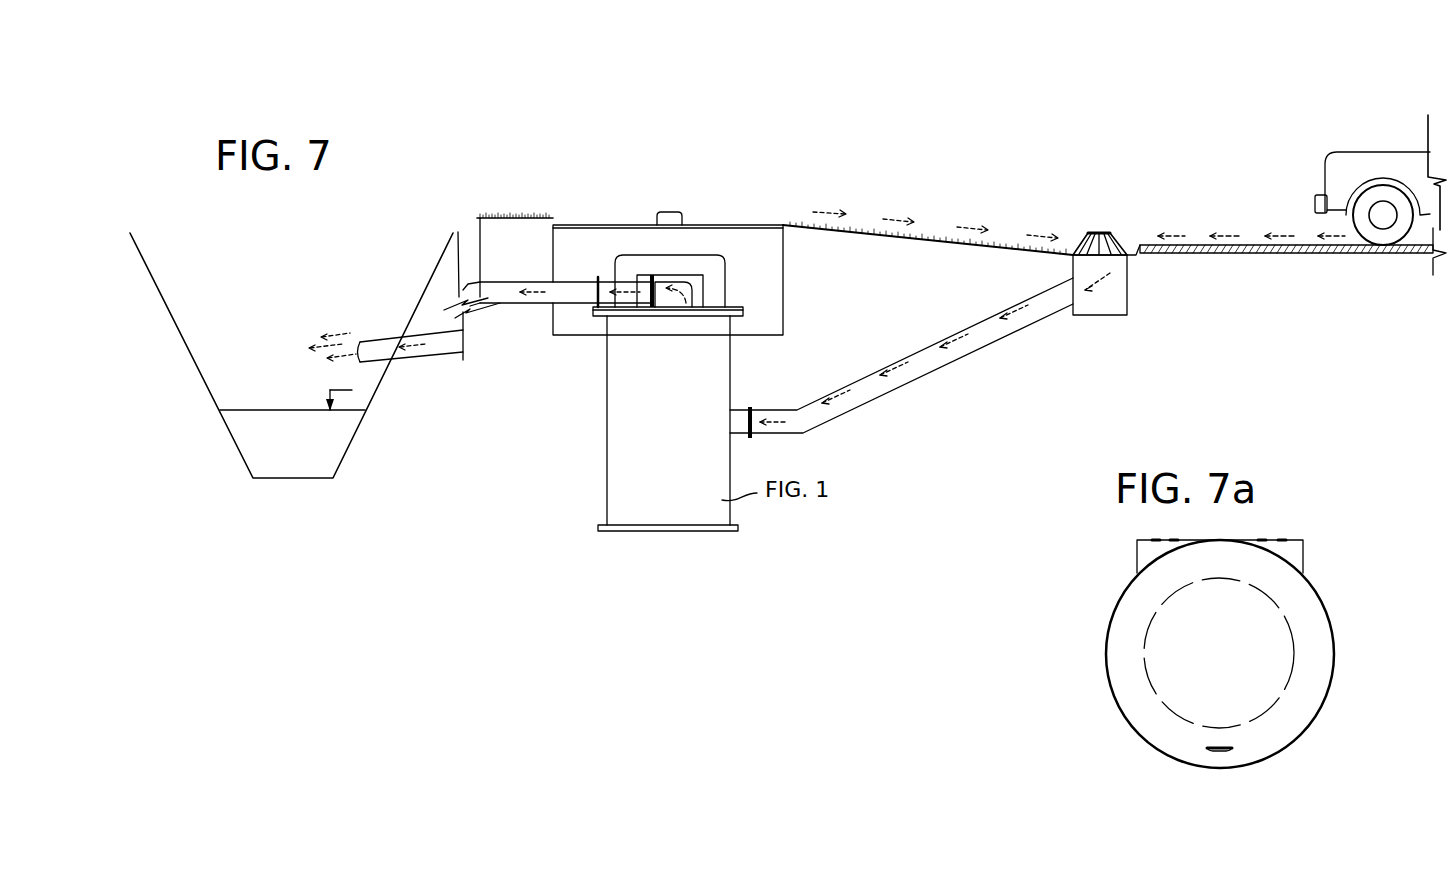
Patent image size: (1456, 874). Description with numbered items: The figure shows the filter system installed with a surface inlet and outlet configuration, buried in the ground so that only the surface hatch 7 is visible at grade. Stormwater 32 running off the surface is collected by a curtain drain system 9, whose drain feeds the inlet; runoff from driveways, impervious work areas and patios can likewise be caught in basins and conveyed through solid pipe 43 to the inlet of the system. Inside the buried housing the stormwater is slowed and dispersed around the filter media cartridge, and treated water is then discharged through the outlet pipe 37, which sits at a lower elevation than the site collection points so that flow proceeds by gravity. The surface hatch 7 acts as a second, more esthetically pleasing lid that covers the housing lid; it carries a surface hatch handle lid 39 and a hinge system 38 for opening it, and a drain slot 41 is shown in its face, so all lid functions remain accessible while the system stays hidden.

In FIG. 7, the surface hatch 7 is at (617, 224).
In FIG. 7A, the surface hatch 7 is at (1317, 625).
In FIG. 7, the curtain drain system 9 is at (1112, 307).
In FIG. 7, the stormwater 32 is at (1252, 229).
In FIG. 7, the outlet pipe 37 is at (513, 304).
In FIG. 7A, the hinge system 38 is at (1287, 540).
In FIG. 7A, the surface hatch handle lid 39 is at (1278, 670).
In FIG. 7A, the bottom drain slot 41 is at (1223, 752).
In FIG. 7, the solid pipe 43 is at (945, 360).